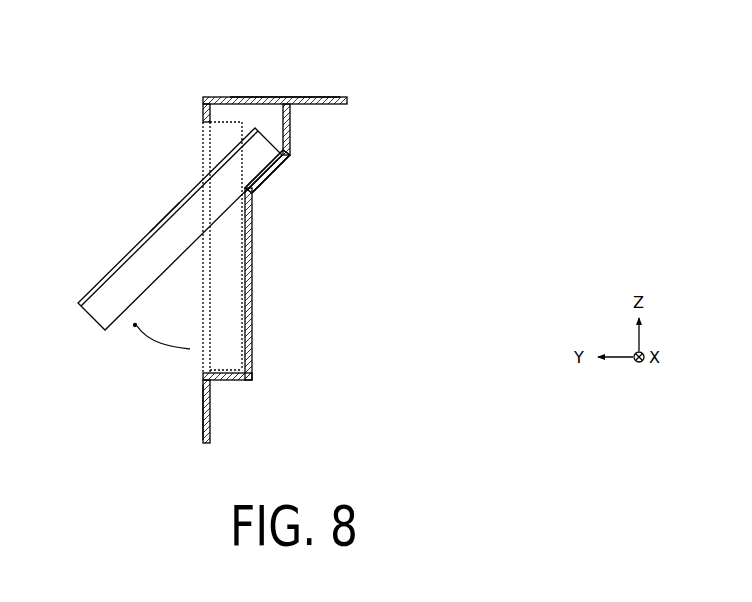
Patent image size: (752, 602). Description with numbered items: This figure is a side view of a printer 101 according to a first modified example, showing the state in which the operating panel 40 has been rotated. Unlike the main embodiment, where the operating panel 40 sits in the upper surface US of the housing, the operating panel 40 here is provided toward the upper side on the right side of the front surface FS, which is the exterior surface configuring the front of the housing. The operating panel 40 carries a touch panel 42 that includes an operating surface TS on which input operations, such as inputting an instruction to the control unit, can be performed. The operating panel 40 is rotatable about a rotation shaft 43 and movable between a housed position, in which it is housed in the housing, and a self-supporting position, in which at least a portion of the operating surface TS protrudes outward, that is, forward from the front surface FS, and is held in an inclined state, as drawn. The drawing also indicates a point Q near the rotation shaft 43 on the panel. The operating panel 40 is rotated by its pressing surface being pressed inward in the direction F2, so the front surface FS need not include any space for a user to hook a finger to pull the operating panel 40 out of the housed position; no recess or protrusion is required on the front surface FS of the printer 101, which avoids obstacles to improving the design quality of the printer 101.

The printer 101 is at (98, 67).
The operating panel 40 is at (118, 291).
The touch panel 42 is at (138, 245).
The rotation shaft 43 is at (250, 202).
The upper surface US is at (266, 97).
The front surface FS is at (200, 415).
The operating surface TS is at (165, 216).
The direction F2 is at (199, 147).
The point Q is at (241, 201).